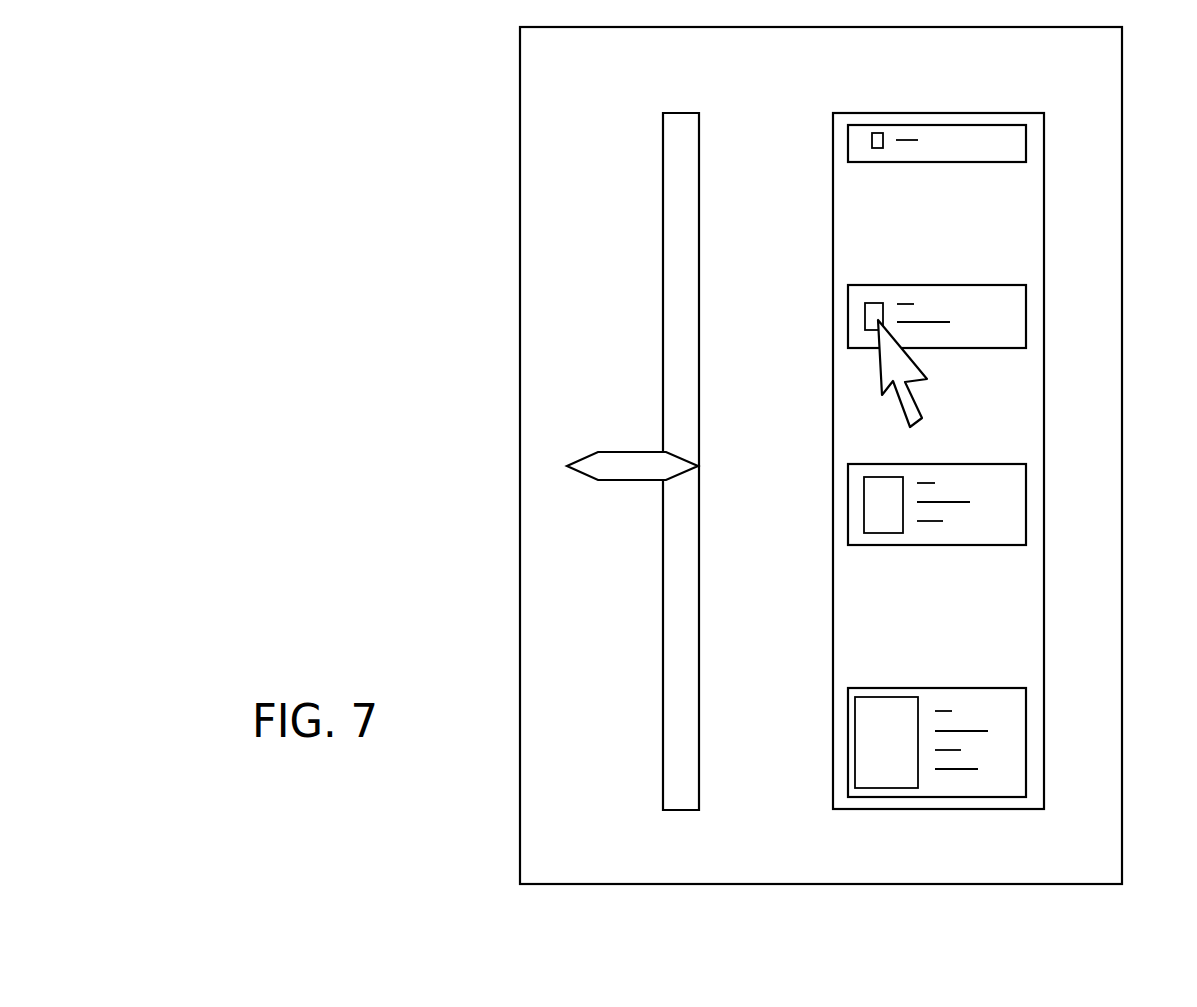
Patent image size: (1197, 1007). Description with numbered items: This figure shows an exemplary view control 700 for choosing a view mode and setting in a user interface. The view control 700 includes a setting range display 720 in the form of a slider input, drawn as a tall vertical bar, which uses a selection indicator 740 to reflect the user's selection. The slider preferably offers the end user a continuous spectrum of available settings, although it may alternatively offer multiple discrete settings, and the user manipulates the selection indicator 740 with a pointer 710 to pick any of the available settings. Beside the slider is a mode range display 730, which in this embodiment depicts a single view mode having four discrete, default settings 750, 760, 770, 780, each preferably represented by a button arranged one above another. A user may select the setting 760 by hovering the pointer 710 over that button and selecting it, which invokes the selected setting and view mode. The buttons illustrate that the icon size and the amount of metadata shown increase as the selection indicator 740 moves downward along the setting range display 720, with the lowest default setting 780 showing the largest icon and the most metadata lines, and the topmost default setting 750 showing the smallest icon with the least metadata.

The view control 700 is at (428, 259).
The pointer 710 is at (880, 376).
The setting range display 720 is at (682, 113).
The mode range display 730 is at (1044, 459).
The selection indicator 740 is at (627, 481).
The default setting 750 is at (1026, 143).
The default setting 760 is at (1026, 316).
The default setting 770 is at (1026, 503).
The default setting 780 is at (1026, 742).